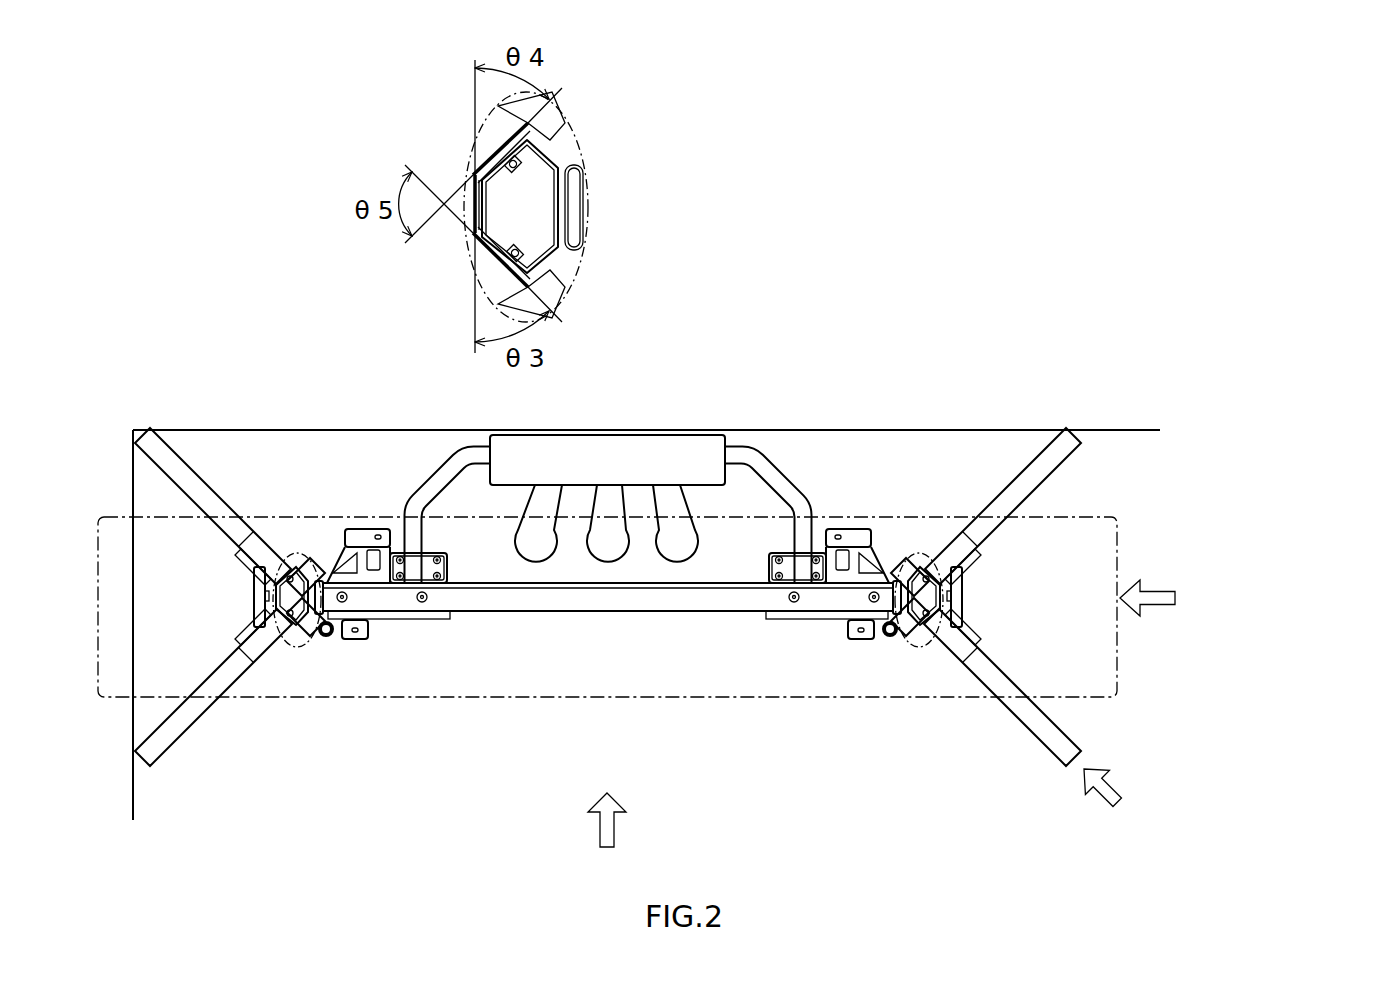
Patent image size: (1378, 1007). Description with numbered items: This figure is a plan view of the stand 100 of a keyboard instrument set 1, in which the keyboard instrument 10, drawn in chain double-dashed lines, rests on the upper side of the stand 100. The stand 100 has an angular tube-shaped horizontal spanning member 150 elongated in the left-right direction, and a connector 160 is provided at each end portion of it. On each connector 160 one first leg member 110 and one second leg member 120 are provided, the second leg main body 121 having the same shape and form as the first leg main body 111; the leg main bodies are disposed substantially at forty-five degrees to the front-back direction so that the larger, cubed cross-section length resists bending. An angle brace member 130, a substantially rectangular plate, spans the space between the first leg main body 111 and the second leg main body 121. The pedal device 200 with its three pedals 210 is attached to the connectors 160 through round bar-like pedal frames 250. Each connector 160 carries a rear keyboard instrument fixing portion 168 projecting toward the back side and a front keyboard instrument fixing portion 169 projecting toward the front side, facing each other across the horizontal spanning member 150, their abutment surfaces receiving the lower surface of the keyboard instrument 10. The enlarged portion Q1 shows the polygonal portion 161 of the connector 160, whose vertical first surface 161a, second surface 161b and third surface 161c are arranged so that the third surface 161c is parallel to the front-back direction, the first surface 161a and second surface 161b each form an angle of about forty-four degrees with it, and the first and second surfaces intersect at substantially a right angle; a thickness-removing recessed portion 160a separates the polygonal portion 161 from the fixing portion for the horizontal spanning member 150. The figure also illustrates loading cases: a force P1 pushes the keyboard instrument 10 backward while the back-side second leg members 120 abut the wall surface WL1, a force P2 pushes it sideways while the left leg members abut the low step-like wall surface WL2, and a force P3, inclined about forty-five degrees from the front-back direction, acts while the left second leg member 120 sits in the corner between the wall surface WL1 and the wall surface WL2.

The keyboard instrument set 1 is at (1128, 660).
The keyboard instrument 10 is at (1117, 557).
The stand 100 is at (793, 800).
The first leg member 110 is at (177, 752).
The first leg main body 111 is at (197, 724).
The second leg member 120 is at (1061, 322).
The second leg main body 121 is at (1020, 468).
The angle brace member 130 is at (254, 594).
The horizontal spanning member 150 is at (634, 613).
The connector 160 is at (385, 640).
The thickness-removing recessed portion 160a is at (573, 222).
The polygonal portion 161 is at (534, 190).
The first surface 161a is at (506, 276).
The second surface 161b is at (502, 150).
The third surface 161c is at (472, 200).
The rear keyboard instrument fixing portion 168 is at (355, 533).
The front keyboard instrument fixing portion 169 is at (336, 641).
The pedal device 200 is at (700, 400).
The pedals 210 is at (677, 544).
The pedal frame 250 is at (430, 464).
The portion Q1 is at (582, 275).
The wall surface WL1 is at (1118, 433).
The wall surface WL2 is at (137, 611).
The force P1 is at (607, 841).
The force P2 is at (1167, 598).
The force P3 is at (1114, 800).